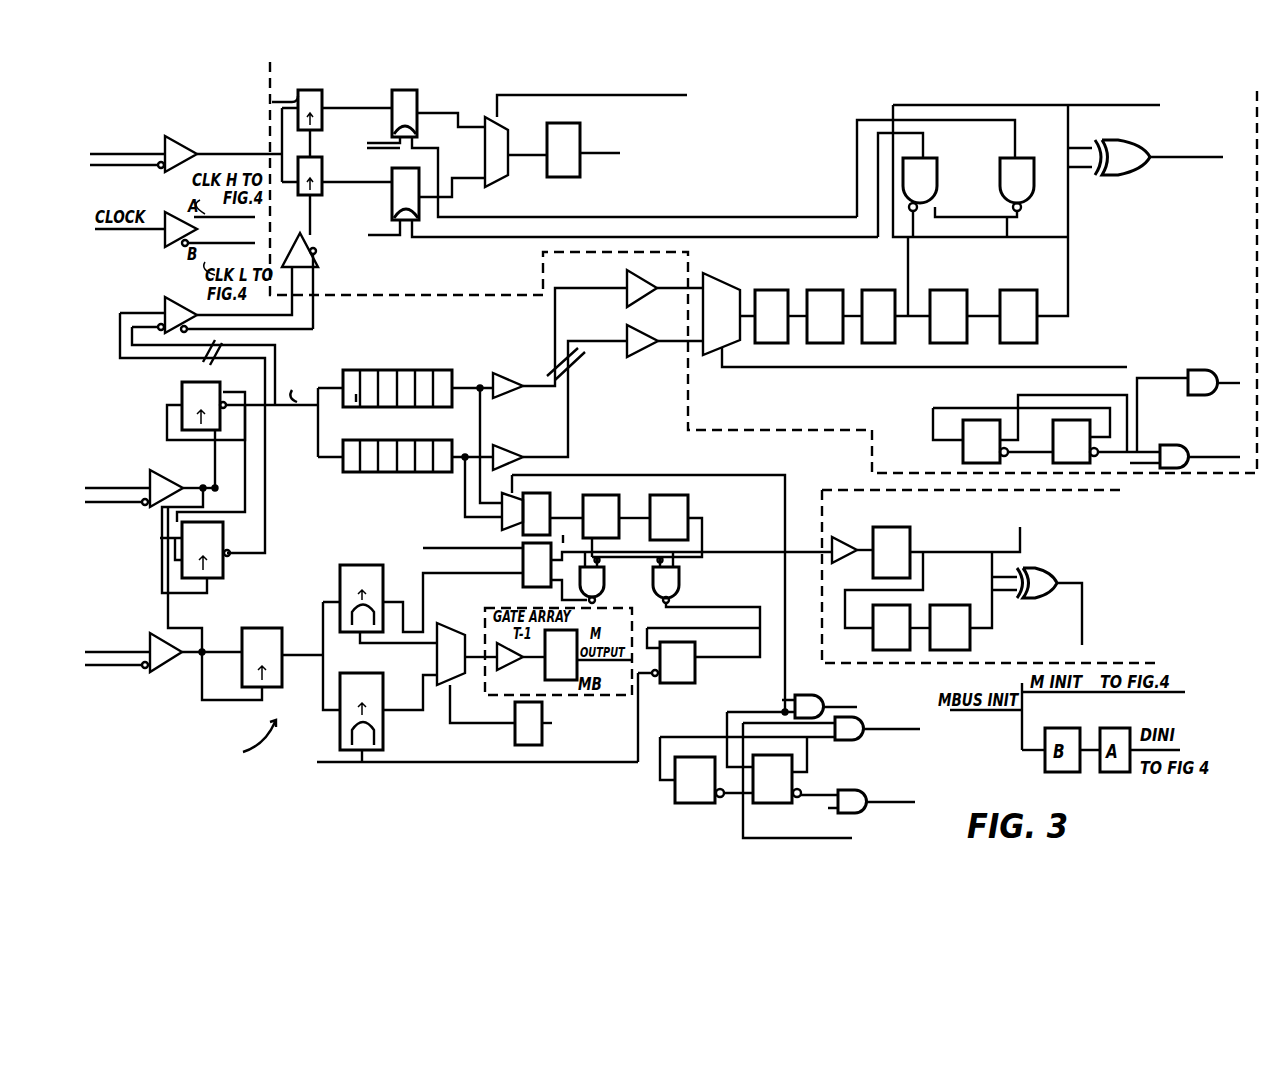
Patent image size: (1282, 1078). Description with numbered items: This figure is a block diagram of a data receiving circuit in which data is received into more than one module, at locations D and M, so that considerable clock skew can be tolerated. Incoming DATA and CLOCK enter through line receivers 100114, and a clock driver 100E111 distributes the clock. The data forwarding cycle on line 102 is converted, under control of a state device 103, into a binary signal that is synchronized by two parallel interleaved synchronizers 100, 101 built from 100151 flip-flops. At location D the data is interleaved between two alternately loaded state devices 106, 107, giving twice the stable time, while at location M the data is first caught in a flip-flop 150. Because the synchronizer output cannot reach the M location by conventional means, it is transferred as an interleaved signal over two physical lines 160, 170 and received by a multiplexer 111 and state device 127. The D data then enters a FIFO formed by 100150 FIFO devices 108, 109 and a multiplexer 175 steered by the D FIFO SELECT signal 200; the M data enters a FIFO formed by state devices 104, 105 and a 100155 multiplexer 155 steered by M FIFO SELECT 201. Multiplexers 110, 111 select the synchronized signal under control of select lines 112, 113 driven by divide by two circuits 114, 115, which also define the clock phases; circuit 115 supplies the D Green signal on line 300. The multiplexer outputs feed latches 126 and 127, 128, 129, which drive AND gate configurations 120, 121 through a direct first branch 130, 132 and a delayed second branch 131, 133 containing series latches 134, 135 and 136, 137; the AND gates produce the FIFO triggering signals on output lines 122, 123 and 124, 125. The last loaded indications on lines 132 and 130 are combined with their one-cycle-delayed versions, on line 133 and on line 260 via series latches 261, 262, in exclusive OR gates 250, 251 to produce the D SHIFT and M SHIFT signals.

The 100114 line receiver 100114 is at (191, 404).
The 100E111 clock driver 100E111 is at (216, 410).
The state device 106 is at (278, 91).
The state device 107 is at (310, 197).
The 100151 flip-flop 100151 is at (261, 333).
The 100150 FIFO device 100150 is at (615, 155).
The FIFO state device 109 is at (418, 128).
The FIFO state device 108 is at (392, 216).
The multiplexer 175 is at (508, 178).
The D FIFO SELECT signal line 200 is at (700, 97).
The output line 124 is at (830, 220).
The output line 125 is at (858, 240).
The AND gate configuration 121 is at (1013, 110).
The first branch / D LAST LOADED line 132 is at (908, 253).
The exclusive OR gate 250 is at (1112, 178).
The second branch line 133 is at (1073, 285).
The physical line 160 is at (528, 372).
The physical line 170 is at (535, 455).
The synchronizer 100 is at (343, 370).
The synchronizer 101 is at (343, 465).
The state device 103 is at (182, 388).
The line 102 is at (212, 583).
The flip-flop 150 is at (262, 612).
The FIFO state device 104 is at (340, 588).
The FIFO state device 105 is at (340, 738).
The 100155 multiplexer 100155 is at (480, 598).
The multiplexer 155 is at (437, 660).
The multiplexer 110 is at (502, 507).
The M FIFO SELECT signal line 201 is at (606, 742).
The select line 112 is at (775, 526).
The latch 126 is at (550, 507).
The latch 134 is at (622, 500).
The latch 135 is at (680, 505).
The second branch 131 is at (702, 528).
The first branch / M LAST LOADED line 130 is at (677, 567).
The output line 123 is at (606, 578).
The AND gate configuration 120 is at (690, 589).
The output line 122 is at (731, 660).
The divide by two circuit 114 is at (821, 775).
The multiplexer 111 is at (708, 280).
The state device 127 is at (784, 290).
The latch 128 is at (838, 283).
The latch 129 is at (890, 283).
The latch 136 is at (975, 283).
The latch 137 is at (1042, 292).
The select line 113 is at (822, 368).
The output line 300 is at (1005, 397).
The divide by two circuit 115 is at (924, 426).
The line 260 is at (842, 572).
The latch 261 is at (872, 645).
The latch 262 is at (975, 650).
The exclusive OR gate 251 is at (1058, 579).